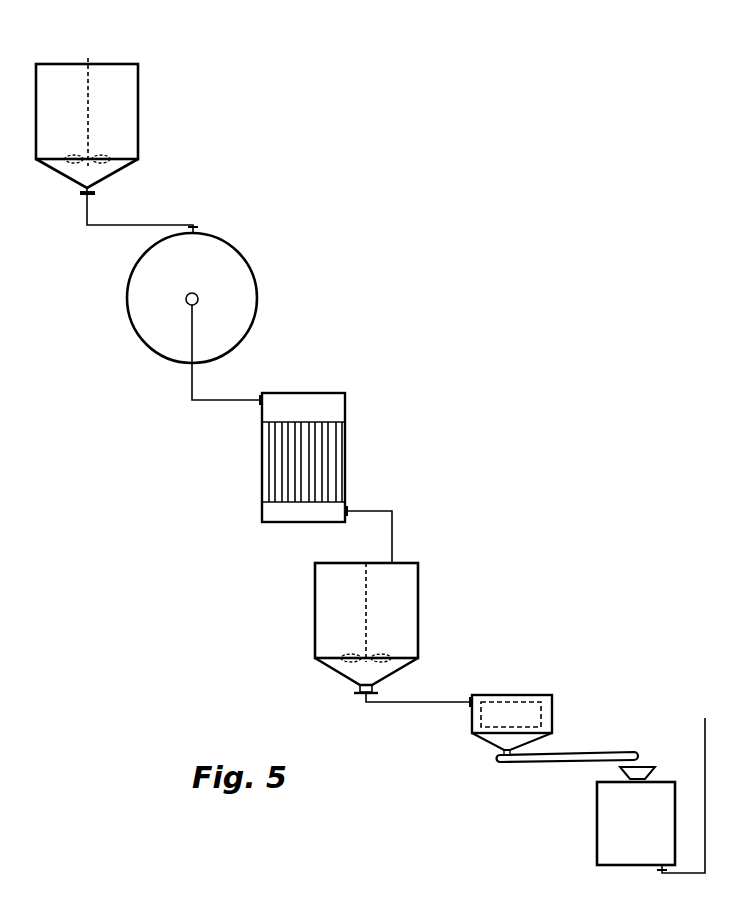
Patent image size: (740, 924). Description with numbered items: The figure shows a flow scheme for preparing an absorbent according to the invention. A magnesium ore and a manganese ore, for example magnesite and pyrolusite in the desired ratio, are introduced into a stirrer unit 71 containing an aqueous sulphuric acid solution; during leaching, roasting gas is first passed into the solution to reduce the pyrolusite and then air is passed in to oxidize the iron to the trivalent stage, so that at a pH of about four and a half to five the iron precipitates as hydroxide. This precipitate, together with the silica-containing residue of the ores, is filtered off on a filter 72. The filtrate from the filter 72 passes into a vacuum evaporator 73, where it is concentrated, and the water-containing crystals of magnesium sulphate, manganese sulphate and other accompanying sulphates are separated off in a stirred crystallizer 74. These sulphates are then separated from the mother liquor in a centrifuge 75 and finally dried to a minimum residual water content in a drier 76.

The stirrer unit 71 is at (121, 120).
The filter 72 is at (228, 334).
The vacuum evaporator 73 is at (328, 419).
The stirred crystallizer 74 is at (399, 628).
The centrifuge 75 is at (527, 725).
The drier 76 is at (642, 831).